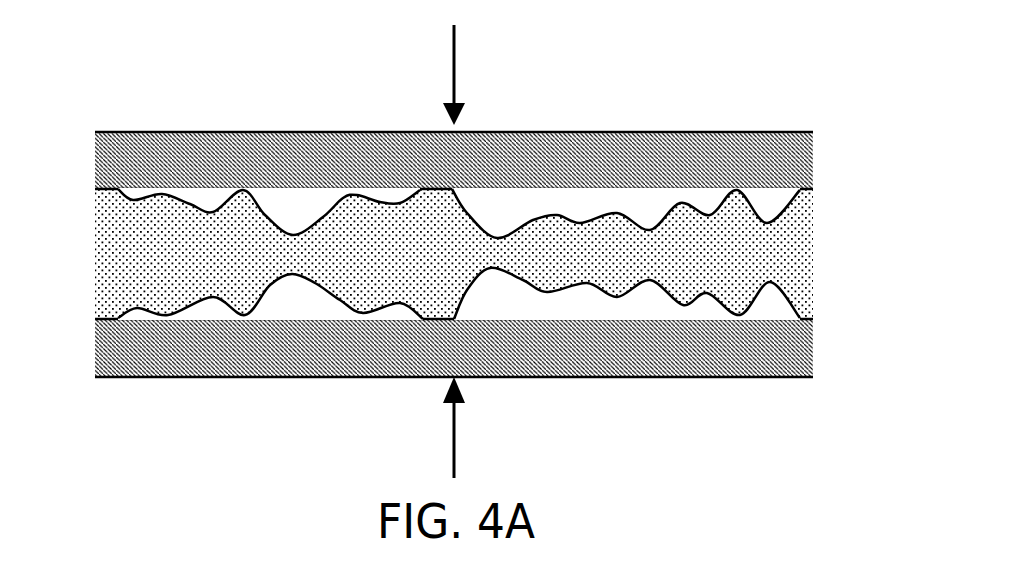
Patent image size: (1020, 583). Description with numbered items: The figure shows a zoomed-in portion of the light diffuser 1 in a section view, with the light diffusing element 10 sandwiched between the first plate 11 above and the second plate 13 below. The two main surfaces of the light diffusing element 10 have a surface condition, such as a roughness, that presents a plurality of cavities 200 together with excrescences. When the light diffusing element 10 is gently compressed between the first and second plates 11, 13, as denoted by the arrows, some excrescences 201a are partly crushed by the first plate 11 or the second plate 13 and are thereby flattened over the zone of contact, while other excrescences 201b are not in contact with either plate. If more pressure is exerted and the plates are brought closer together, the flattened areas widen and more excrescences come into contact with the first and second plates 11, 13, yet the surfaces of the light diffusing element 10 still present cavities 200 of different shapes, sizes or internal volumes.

The light diffuser 1 is at (110, 68).
The light diffusing element 10 is at (797, 246).
The first plate 11 is at (797, 158).
The second plate 13 is at (797, 344).
The cavities 200 is at (497, 227).
The excrescences partly crushed 201a is at (366, 208).
The excrescences not in contact 201b is at (682, 288).